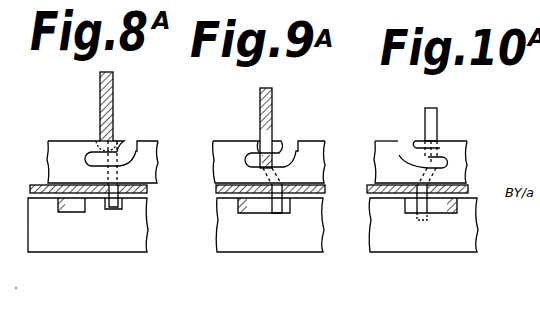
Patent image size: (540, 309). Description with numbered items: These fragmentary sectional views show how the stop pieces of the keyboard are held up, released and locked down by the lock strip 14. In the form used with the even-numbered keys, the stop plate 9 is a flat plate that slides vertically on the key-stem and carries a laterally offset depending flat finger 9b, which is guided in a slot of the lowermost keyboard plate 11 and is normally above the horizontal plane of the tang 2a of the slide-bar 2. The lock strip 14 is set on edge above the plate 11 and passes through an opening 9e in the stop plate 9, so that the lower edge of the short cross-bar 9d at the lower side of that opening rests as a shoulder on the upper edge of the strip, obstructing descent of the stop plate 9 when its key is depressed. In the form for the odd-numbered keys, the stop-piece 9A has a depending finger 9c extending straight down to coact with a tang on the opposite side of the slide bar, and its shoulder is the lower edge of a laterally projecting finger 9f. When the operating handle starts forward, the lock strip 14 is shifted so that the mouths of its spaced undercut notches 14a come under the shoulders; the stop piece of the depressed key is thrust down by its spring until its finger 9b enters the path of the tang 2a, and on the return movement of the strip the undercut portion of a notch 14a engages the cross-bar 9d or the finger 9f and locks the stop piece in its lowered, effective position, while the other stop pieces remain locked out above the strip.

In FIG. 8A, the slide-bar 2 is at (128, 232).
In FIG. 9A, the slide-bar 2 is at (216, 211).
In FIG. 10A, the slide-bar 2 is at (465, 243).
In FIG. 8A, the tang of the slide-bar 2a is at (78, 204).
In FIG. 9A, the tang of the slide-bar 2a is at (262, 208).
In FIG. 10A, the tang of the slide-bar 2a is at (433, 213).
In FIG. 8A, the stop plate 9 is at (100, 78).
In FIG. 9A, the stop plate 9 is at (273, 106).
In FIG. 10A, the stop-piece 9A is at (432, 122).
In FIG. 8A, the depending flat finger 9b is at (114, 196).
In FIG. 9A, the depending flat finger 9b is at (277, 213).
In FIG. 10A, the depending finger 9c is at (405, 203).
In FIG. 8A, the short cross-bar 9d is at (113, 126).
In FIG. 9A, the short cross-bar 9d is at (248, 160).
In FIG. 8A, the opening 9e is at (100, 108).
In FIG. 9A, the opening 9e is at (259, 132).
In FIG. 10A, the laterally projecting finger 9f is at (448, 160).
In FIG. 8A, the lowermost keyboard plate 11 is at (147, 189).
In FIG. 9A, the lowermost keyboard plate 11 is at (324, 192).
In FIG. 10A, the lowermost keyboard plate 11 is at (468, 192).
In FIG. 8A, the lock strip 14 is at (67, 150).
In FIG. 9A, the lock strip 14 is at (230, 146).
In FIG. 10A, the lock strip 14 is at (383, 148).
In FIG. 8A, the undercut notches 14a is at (125, 152).
In FIG. 9A, the undercut notches 14a is at (285, 150).
In FIG. 10A, the undercut notches 14a is at (399, 155).